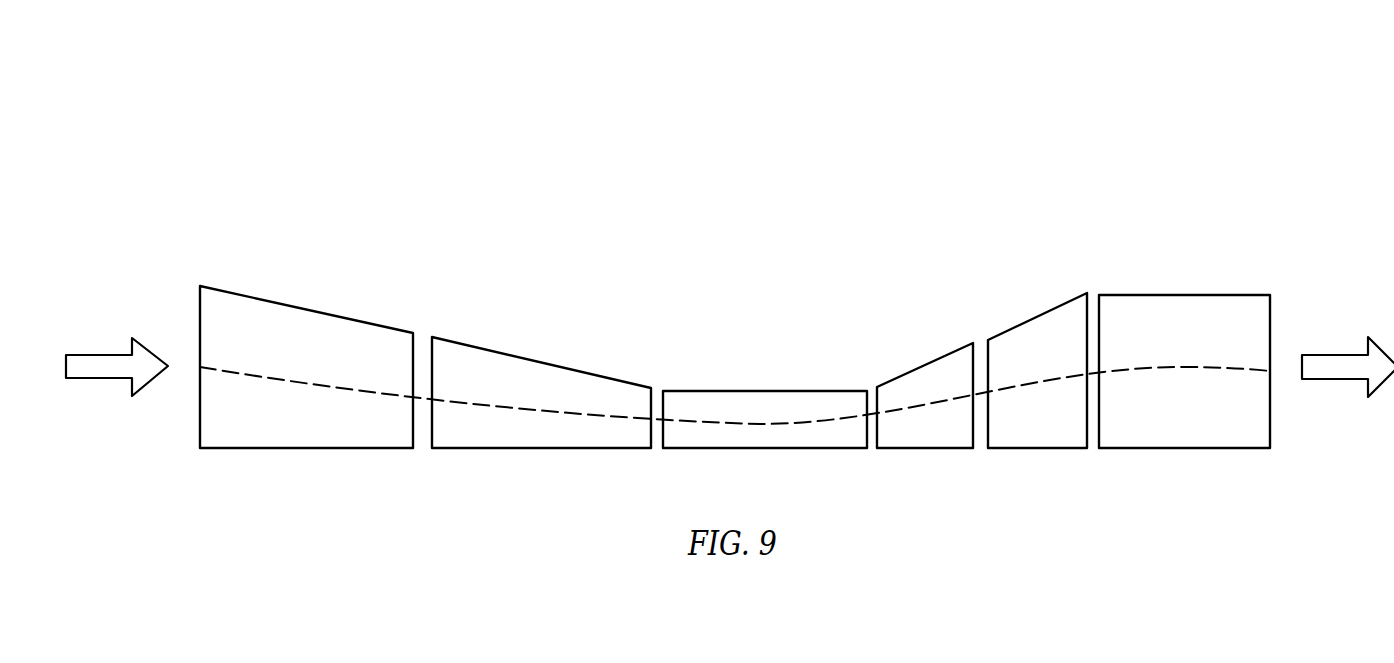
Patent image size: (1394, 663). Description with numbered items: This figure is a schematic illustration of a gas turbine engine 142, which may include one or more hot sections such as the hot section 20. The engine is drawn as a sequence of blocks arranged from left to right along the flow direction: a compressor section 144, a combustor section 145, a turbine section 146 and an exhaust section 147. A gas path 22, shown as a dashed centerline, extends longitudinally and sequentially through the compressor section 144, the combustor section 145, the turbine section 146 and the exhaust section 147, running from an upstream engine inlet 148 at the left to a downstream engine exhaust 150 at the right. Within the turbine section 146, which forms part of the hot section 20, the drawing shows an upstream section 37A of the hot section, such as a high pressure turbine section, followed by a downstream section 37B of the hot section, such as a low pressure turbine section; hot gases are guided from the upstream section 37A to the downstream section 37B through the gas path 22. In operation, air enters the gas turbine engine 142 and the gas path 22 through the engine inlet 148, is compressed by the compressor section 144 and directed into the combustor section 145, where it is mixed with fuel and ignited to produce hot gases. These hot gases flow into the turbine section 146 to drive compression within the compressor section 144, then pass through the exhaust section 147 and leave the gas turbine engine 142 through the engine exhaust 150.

The gas turbine engine 142 is at (730, 270).
The compressor section 144 is at (657, 382).
The combustor section 145 is at (872, 382).
The turbine section 146 is at (872, 162).
The hot section 20 is at (982, 274).
The exhaust section 147 is at (1277, 290).
The upstream section of the hot section 37A is at (934, 338).
The downstream section of the hot section 37B is at (1032, 298).
The gas path 22 is at (318, 390).
The engine inlet 148 is at (200, 424).
The engine exhaust 150 is at (1270, 320).